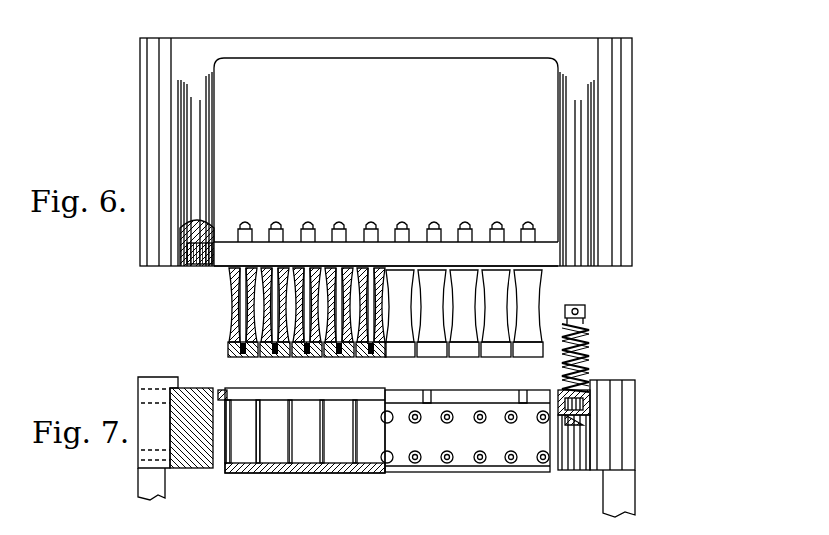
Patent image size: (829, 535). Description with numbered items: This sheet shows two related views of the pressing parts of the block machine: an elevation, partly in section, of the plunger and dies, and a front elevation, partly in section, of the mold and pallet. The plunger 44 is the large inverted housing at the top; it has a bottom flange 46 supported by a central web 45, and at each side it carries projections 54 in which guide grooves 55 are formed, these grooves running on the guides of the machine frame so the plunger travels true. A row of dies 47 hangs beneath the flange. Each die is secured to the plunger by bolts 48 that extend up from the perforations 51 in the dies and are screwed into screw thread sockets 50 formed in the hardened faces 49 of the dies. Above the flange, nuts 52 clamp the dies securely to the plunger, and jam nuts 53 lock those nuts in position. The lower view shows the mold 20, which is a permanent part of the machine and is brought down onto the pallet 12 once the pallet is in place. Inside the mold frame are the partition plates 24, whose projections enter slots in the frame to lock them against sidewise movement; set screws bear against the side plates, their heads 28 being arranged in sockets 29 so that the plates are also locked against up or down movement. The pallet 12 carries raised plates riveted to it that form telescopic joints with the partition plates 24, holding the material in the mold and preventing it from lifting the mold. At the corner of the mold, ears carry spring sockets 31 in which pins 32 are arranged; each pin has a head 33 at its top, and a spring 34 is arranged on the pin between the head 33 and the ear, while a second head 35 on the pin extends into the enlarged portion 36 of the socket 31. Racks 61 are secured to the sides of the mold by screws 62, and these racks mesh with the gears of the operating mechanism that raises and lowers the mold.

In FIG. 6, the plunger 44 is at (450, 38).
In FIG. 6, the projections 54 is at (140, 99).
In FIG. 6, the guide grooves 55 is at (155, 132).
In FIG. 6, the central web 45 is at (386, 162).
In FIG. 6, the bottom flange 46 is at (386, 254).
In FIG. 6, the nuts 52 is at (256, 236).
In FIG. 6, the jam nuts 53 is at (254, 224).
In FIG. 6, the bolts 48 is at (242, 292).
In FIG. 6, the perforations 51 is at (238, 312).
In FIG. 6, the dies 47 is at (232, 326).
In FIG. 6, the hardened faces 49 is at (230, 353).
In FIG. 6, the screw thread sockets 50 is at (243, 358).
In FIG. 6, the heads 33 is at (586, 311).
In FIG. 6, the pins 32 is at (586, 324).
In FIG. 6, the springs 34 is at (590, 355).
In FIG. 7, the racks 61 is at (148, 490).
In FIG. 7, the screws 62 is at (138, 457).
In FIG. 7, the mold 20 is at (368, 400).
In FIG. 7, the bottom plate 12 is at (313, 473).
In FIG. 7, the partition plates 24 is at (322, 435).
In FIG. 7, the heads 28 is at (417, 457).
In FIG. 7, the sockets 29 is at (487, 436).
In FIG. 7, the spring sockets 31 is at (580, 390).
In FIG. 7, the heads 35 is at (590, 411).
In FIG. 7, the enlarged portion 36 is at (590, 427).